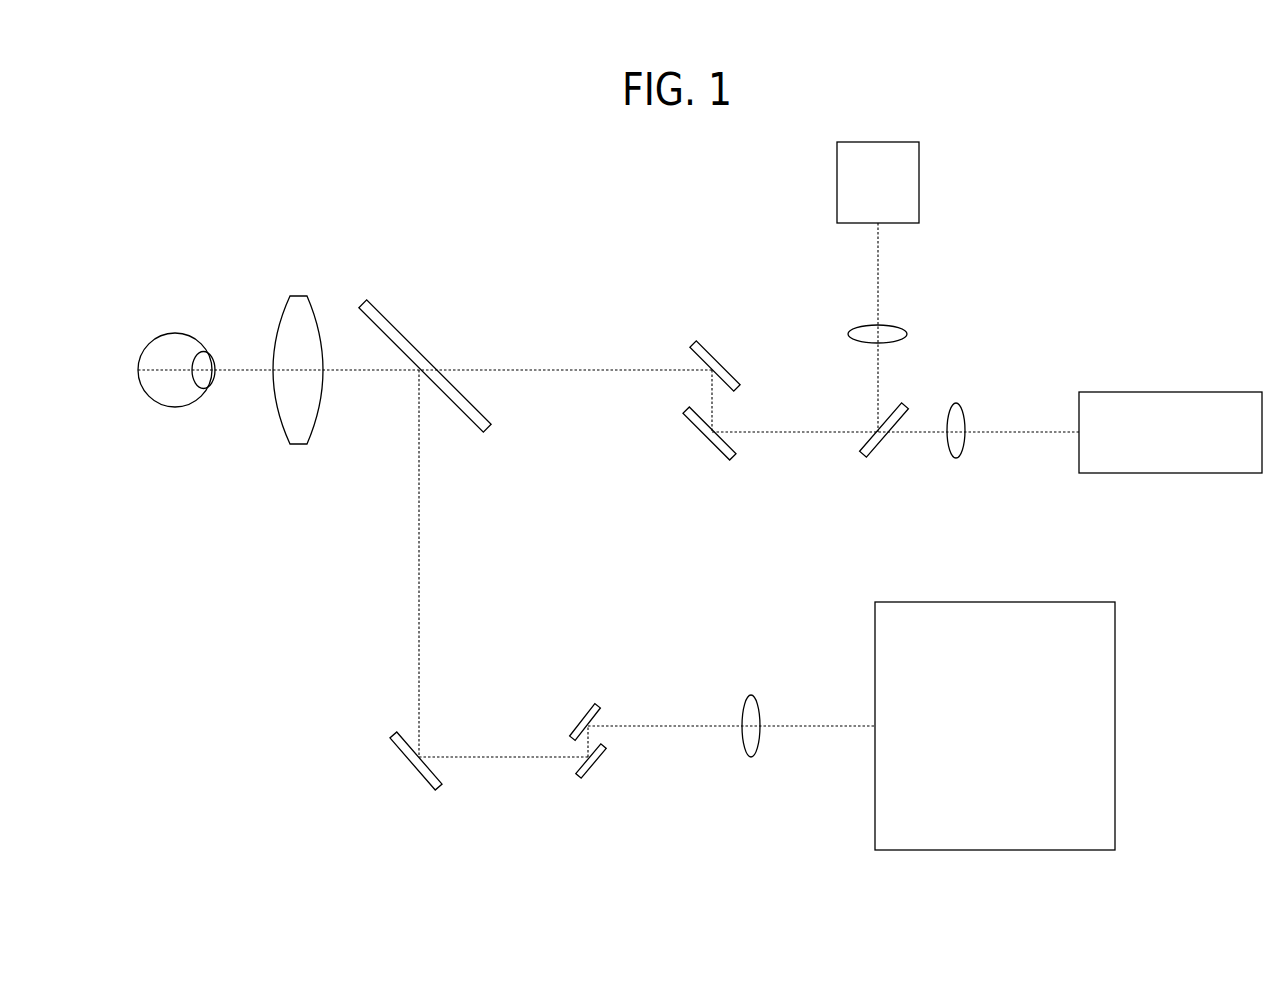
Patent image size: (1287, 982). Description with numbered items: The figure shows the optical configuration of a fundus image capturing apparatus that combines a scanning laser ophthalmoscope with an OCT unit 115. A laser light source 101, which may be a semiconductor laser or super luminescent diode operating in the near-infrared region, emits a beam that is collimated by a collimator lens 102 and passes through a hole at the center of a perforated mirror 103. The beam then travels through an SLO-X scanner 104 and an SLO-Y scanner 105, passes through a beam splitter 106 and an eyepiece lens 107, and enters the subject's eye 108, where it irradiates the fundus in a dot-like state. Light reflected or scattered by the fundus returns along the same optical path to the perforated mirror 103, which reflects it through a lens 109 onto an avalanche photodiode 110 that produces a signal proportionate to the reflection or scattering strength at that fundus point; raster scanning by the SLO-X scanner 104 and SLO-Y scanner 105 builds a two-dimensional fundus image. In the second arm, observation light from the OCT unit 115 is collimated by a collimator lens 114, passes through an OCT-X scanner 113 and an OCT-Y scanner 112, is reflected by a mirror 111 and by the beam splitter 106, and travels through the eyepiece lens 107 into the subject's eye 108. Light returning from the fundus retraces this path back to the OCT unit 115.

The laser light source 101 is at (1175, 392).
The collimator lens 102 is at (955, 403).
The perforated mirror 103 is at (876, 449).
The SLO-X scanner 104 is at (703, 445).
The SLO-Y scanner 105 is at (708, 348).
The beam splitter 106 is at (393, 317).
The eyepiece lens 107 is at (298, 296).
The subject's eye 108 is at (176, 333).
The lens 109 is at (849, 334).
The avalanche photodiode (APD) 110 is at (920, 178).
The mirror 111 is at (410, 765).
The OCT-Y scanner 112 is at (595, 771).
The OCT-X scanner 113 is at (580, 713).
The collimator lens 114 is at (751, 695).
The OCT unit 115 is at (1000, 602).